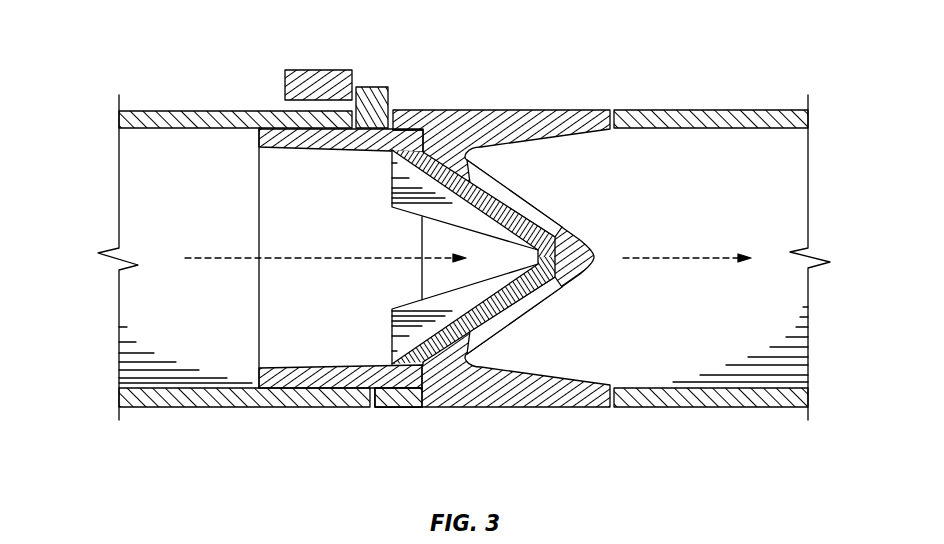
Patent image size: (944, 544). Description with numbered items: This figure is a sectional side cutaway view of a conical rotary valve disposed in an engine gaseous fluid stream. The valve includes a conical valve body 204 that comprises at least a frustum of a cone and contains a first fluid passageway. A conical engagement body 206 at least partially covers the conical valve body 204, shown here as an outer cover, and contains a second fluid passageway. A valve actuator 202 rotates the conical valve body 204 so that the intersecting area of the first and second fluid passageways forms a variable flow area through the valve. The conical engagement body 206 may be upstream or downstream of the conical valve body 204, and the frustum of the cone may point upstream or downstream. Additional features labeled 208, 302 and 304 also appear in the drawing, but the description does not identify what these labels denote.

The valve actuator 202 is at (313, 70).
The conical valve body 204 is at (327, 149).
The conical engagement body 206 is at (512, 110).
The clamp ring 208 is at (372, 87).
The pipe wall 302 is at (228, 111).
The flow direction 304 is at (358, 257).